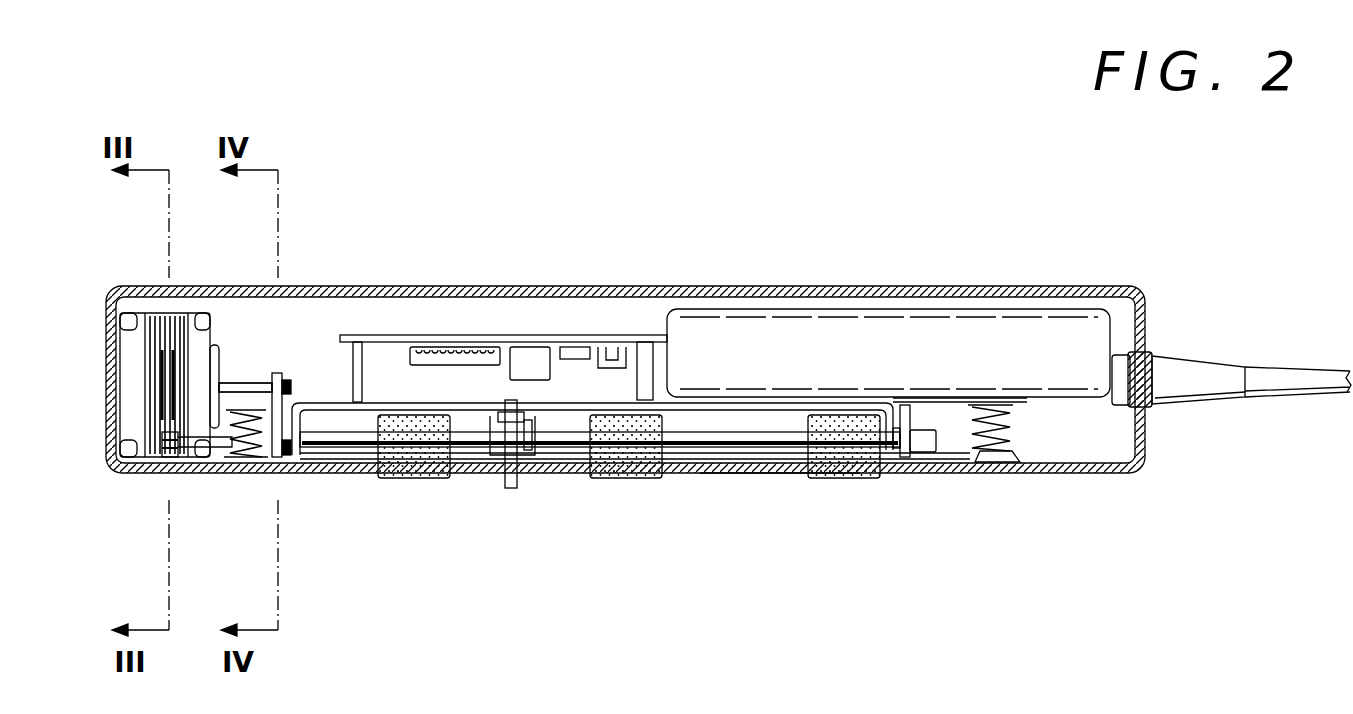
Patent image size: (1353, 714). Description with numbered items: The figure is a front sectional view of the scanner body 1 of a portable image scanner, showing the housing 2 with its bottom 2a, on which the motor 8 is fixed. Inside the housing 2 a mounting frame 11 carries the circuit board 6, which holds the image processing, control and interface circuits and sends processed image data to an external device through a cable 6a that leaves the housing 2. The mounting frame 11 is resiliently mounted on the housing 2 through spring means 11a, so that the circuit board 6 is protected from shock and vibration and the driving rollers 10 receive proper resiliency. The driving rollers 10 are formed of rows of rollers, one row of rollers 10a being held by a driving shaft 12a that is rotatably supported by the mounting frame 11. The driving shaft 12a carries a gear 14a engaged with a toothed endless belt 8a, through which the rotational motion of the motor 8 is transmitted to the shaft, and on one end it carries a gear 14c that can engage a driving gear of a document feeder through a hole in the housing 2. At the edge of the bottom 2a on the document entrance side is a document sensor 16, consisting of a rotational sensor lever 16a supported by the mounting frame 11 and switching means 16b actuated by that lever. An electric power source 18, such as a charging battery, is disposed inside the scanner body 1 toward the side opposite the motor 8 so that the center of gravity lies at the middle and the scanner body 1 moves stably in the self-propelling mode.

The scanner body 1 is at (991, 276).
The housing 2 is at (713, 287).
The bottom 2a is at (777, 475).
The circuit board 6 is at (449, 335).
The cable 6a is at (1305, 387).
The motor 8 is at (140, 374).
The toothed endless belt 8a is at (275, 413).
The driving rollers 10 is at (423, 589).
The rollers 10a is at (413, 479).
The mounting frame 11 is at (565, 402).
The spring means 11a is at (245, 458).
The driving shaft 12a is at (692, 456).
The gear 14a is at (285, 458).
The gear 14c is at (168, 460).
The document sensor 16 is at (549, 510).
The sensor lever 16a is at (510, 488).
The switching means 16b is at (538, 423).
The electric power source 18 is at (845, 333).